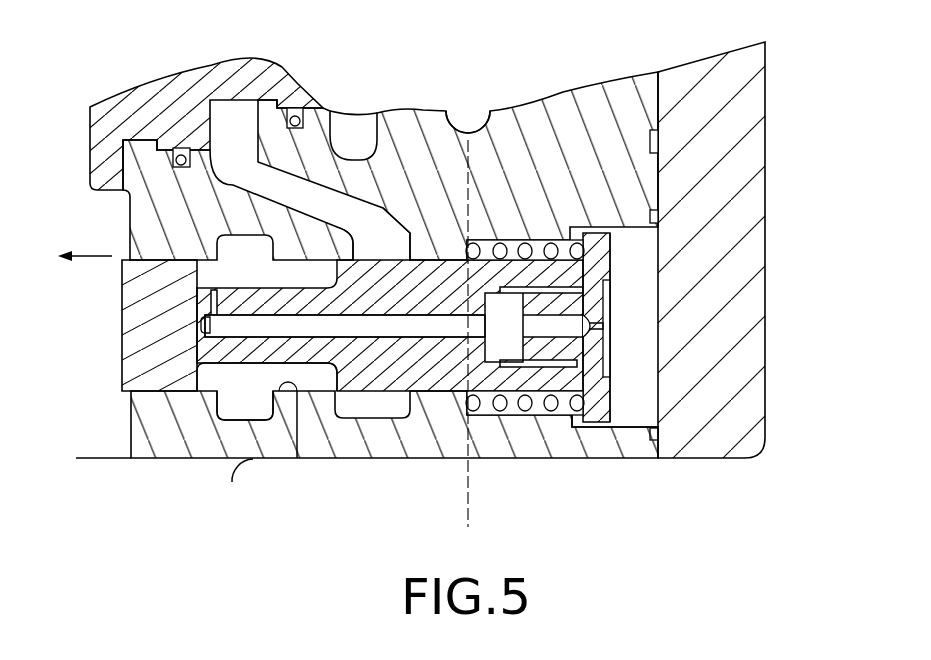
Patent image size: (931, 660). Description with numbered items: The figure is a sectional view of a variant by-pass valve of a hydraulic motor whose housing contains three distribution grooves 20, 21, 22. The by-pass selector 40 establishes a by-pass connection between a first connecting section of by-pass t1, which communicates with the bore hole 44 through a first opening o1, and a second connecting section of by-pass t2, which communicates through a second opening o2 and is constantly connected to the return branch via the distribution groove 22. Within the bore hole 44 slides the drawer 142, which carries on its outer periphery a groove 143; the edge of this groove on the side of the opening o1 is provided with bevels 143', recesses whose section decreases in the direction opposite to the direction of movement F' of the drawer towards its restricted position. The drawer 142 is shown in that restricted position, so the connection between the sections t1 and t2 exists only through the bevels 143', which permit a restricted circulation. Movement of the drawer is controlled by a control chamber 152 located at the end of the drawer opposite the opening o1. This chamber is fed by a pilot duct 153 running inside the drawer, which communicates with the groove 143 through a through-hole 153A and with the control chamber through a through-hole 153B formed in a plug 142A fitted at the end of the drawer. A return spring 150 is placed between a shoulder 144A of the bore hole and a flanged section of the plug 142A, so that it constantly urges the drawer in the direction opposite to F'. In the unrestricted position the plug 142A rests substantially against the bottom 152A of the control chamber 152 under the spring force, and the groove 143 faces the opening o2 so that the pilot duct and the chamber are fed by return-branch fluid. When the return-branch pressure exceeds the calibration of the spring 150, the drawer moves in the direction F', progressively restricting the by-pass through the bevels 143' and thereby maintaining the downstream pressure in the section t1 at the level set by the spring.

The distribution groove 20 is at (470, 128).
The distribution groove 21 is at (350, 147).
The distribution groove 22 is at (228, 158).
The second connecting section of by-pass t2 is at (288, 183).
The second opening o2 is at (384, 243).
The first connecting section of by-pass t1 is at (181, 157).
The first opening o1 is at (232, 402).
The by-pass selector 40 is at (391, 441).
The bore hole 44 is at (131, 458).
The drawer 142 is at (430, 378).
The plug 142A is at (597, 242).
The groove 143 is at (313, 325).
The bevels 143' is at (286, 437).
The shoulder 144A is at (483, 417).
The return spring 150 is at (580, 417).
The control chamber 152 is at (635, 265).
The bottom of the control chamber 152A is at (657, 337).
The pilot duct 153 is at (230, 330).
The through-hole 153A is at (203, 325).
The through-hole 153B is at (603, 326).
The direction of movement of the drawer F' is at (85, 246).